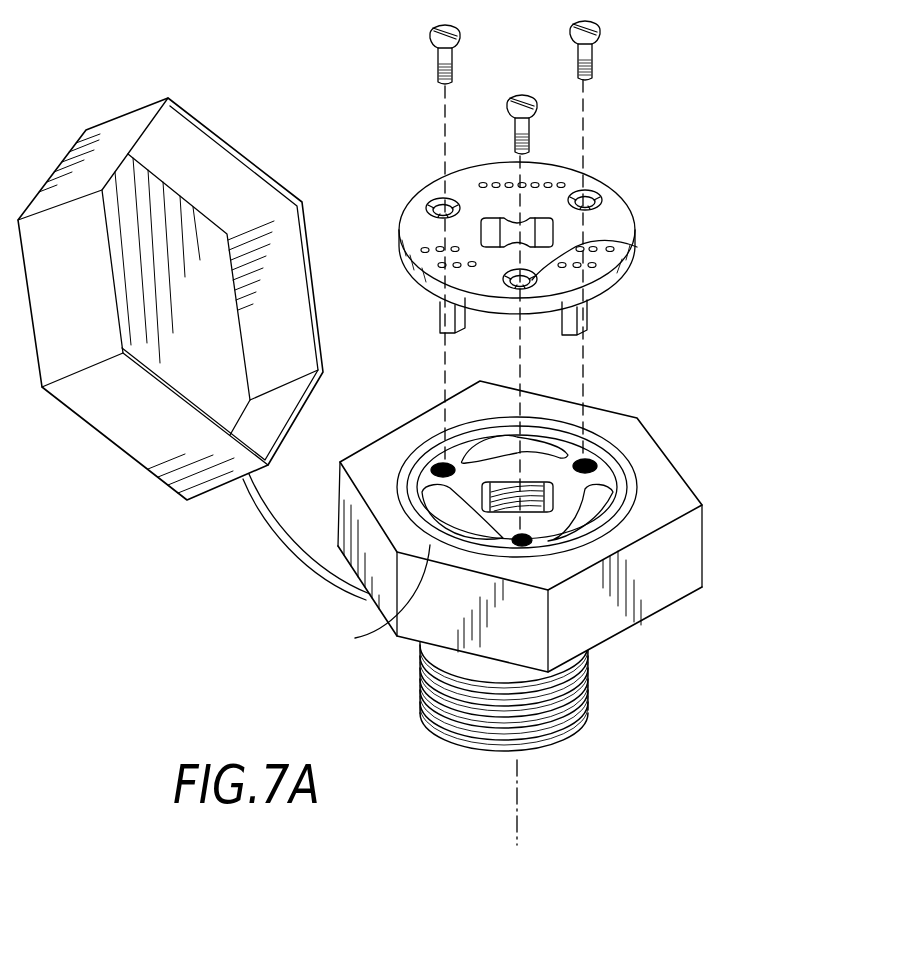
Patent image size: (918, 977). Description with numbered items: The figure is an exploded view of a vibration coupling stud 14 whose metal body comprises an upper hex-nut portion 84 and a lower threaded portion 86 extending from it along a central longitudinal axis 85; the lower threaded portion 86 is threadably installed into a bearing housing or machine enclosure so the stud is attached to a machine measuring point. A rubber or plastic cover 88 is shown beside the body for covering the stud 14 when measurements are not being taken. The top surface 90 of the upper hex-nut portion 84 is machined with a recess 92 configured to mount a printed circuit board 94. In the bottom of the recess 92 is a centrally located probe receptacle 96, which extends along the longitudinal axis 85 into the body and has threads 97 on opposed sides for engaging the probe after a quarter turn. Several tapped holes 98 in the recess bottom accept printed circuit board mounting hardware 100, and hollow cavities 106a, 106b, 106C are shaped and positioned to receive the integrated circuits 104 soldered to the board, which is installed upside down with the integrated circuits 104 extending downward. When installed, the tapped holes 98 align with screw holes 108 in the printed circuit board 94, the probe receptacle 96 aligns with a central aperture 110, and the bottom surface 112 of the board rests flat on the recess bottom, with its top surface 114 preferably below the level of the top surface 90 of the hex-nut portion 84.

The vibration coupling stud 14 is at (558, 592).
The upper hex-nut portion 84 is at (655, 597).
The central longitudinal axis 85 is at (520, 835).
The lower threaded portion 86 is at (420, 714).
The cover 88 is at (122, 118).
The top surface 90 is at (589, 650).
The recess 92 is at (630, 470).
The printed circuit board 94 is at (541, 239).
The probe receptacle 96 is at (540, 474).
The threads 97 is at (377, 599).
The tapped holes 98 is at (442, 463).
The printed circuit board mounting hardware 100 is at (575, 63).
The integrated circuits 104 is at (447, 322).
The hollow cavity 106a is at (410, 460).
The hollow cavity 106b is at (613, 492).
The hollow cavity 106C is at (503, 452).
The screw holes 108 is at (438, 197).
The central aperture 110 is at (617, 243).
The bottom surface 112 is at (617, 289).
The top surface 114 is at (618, 210).